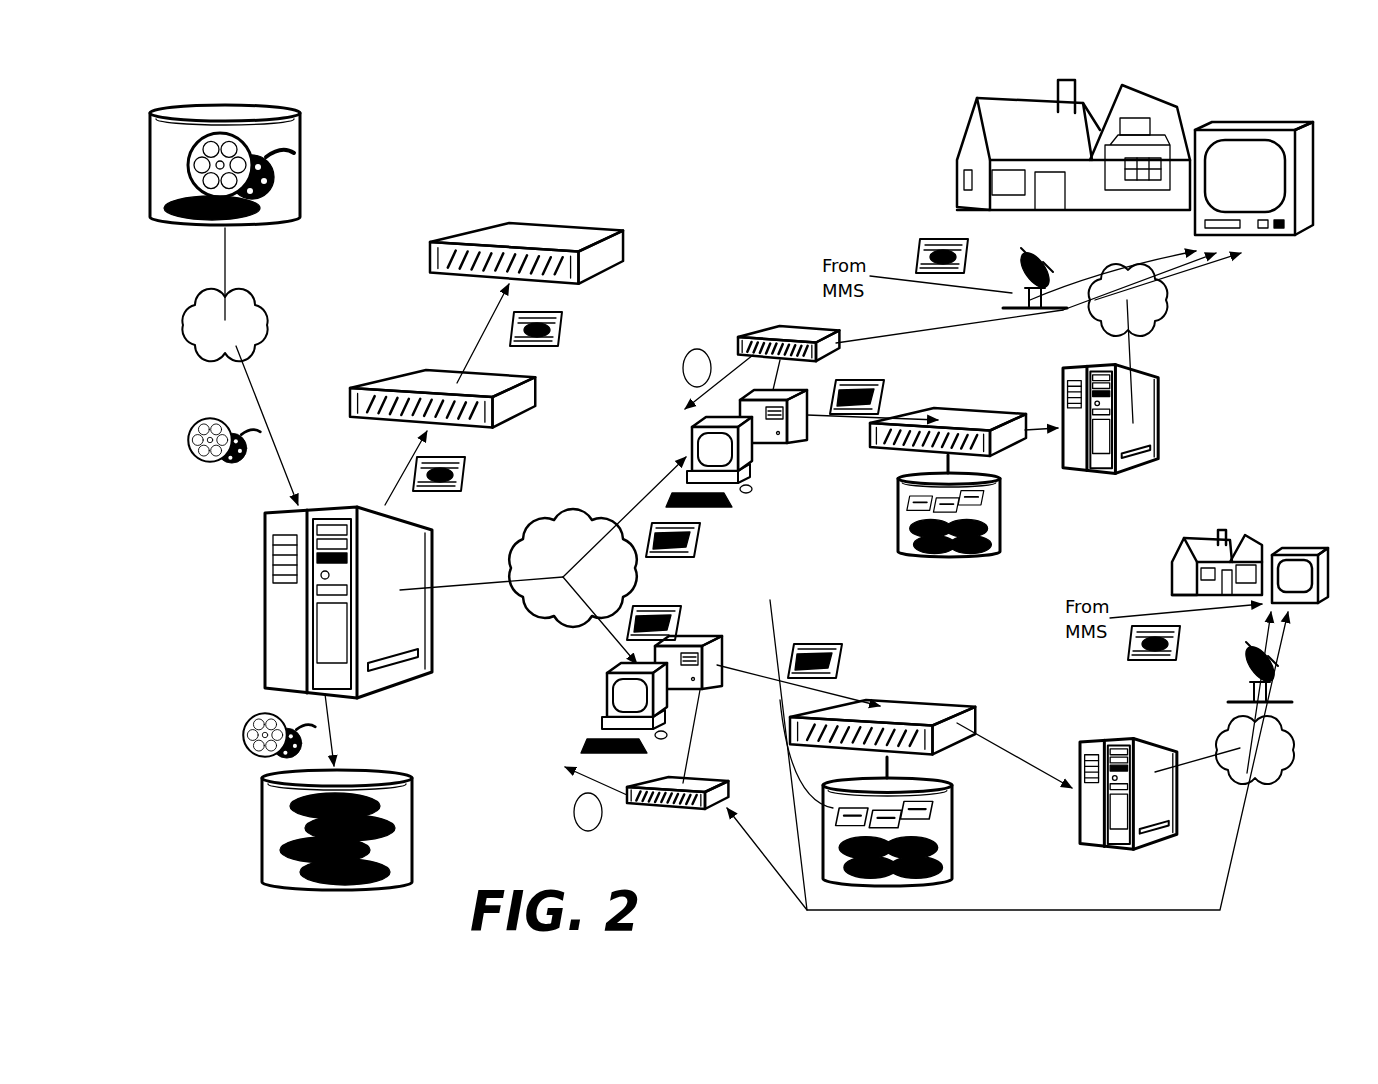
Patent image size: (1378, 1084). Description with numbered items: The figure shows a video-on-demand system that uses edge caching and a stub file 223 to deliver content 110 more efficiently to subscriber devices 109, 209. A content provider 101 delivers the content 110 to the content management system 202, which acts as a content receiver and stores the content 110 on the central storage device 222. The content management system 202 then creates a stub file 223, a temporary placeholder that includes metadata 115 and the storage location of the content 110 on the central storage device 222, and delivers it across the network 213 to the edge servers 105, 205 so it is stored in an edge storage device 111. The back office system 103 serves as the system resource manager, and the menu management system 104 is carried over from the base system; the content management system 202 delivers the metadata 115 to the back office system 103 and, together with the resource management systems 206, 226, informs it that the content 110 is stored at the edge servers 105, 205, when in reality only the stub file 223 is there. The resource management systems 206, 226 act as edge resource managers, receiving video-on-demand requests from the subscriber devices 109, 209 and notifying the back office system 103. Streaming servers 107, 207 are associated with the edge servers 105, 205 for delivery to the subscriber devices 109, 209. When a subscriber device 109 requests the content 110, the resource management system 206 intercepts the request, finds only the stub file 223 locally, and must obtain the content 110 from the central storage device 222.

The content provider 101 is at (283, 203).
The content 110 is at (200, 445).
The back office system 103 is at (383, 418).
The menu management system 104 is at (443, 273).
The metadata 115 is at (563, 327).
The content management system 202 is at (377, 633).
The central storage device 222 is at (265, 827).
The network 213 is at (553, 518).
The resource management system 226 is at (727, 412).
The resource management system 206 is at (632, 695).
The stub file 223 is at (843, 420).
The edge server 205 is at (977, 418).
The streaming server 207 is at (1163, 430).
The edge server 105 is at (894, 715).
The edge storage device 111 is at (918, 832).
The streaming server 107 is at (1147, 800).
The subscriber device 209 is at (1313, 233).
The subscriber device 109 is at (1307, 603).